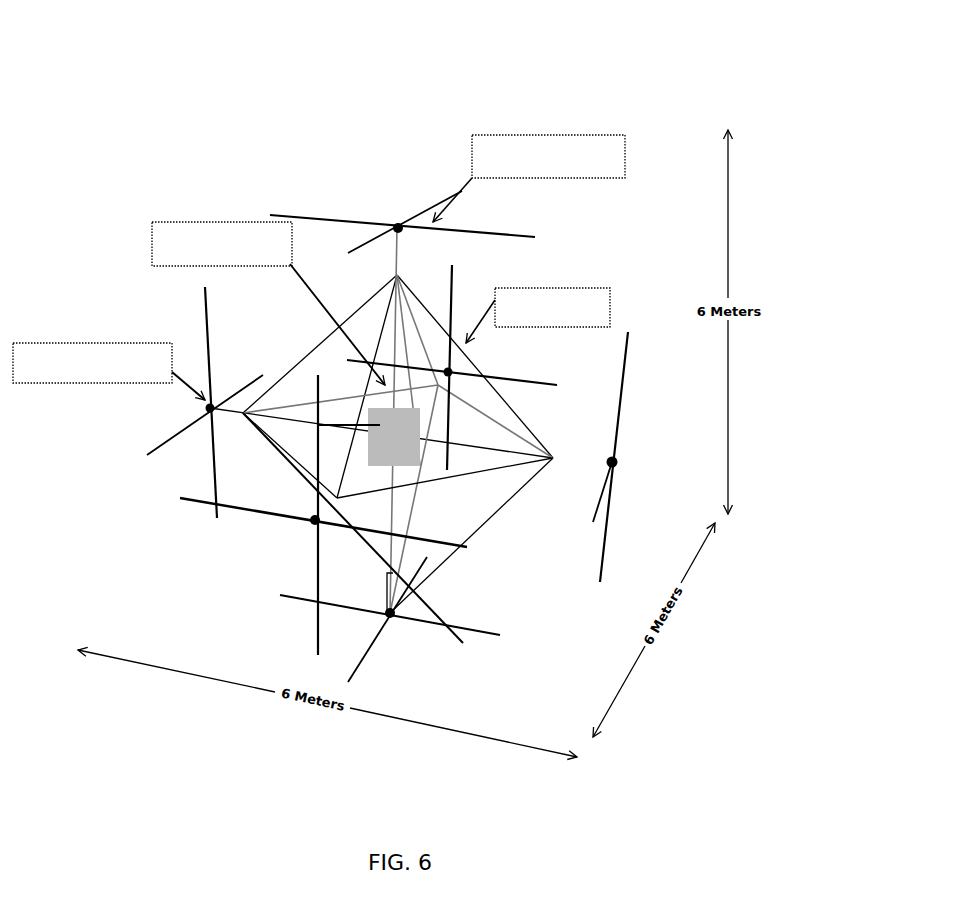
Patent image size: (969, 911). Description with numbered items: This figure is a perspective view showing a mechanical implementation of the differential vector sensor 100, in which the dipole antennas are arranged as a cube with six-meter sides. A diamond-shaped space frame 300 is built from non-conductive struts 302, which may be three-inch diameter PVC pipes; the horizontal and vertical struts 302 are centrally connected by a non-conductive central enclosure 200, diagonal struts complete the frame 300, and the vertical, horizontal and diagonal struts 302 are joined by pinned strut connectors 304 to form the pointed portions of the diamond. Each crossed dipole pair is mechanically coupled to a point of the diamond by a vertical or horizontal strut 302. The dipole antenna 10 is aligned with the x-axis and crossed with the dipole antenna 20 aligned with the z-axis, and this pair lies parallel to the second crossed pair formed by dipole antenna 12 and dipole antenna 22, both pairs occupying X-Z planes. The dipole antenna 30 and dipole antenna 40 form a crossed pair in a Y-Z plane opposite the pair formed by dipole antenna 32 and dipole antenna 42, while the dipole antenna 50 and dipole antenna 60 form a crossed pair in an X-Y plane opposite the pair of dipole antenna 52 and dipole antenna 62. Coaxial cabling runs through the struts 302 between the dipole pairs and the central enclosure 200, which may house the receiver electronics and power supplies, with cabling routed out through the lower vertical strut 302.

The differential vector sensor 100 is at (105, 65).
The dipole antenna 10 is at (185, 421).
The dipole antenna 12 is at (620, 432).
The dipole antenna 20 is at (205, 323).
The dipole antenna 22 is at (605, 532).
The dipole antenna 30 is at (183, 498).
The dipole antenna 32 is at (502, 373).
The dipole antenna 40 is at (315, 636).
The dipole antenna 42 is at (452, 297).
The dipole antenna 50 is at (353, 220).
The dipole antenna 52 is at (455, 621).
The dipole antenna 60 is at (430, 208).
The dipole antenna 62 is at (397, 574).
The central enclosure 200 is at (385, 425).
The diamond-shaped frame 300 is at (449, 492).
The non-conductive strut 302 is at (287, 468).
The pinned strut connector 304 is at (414, 548).